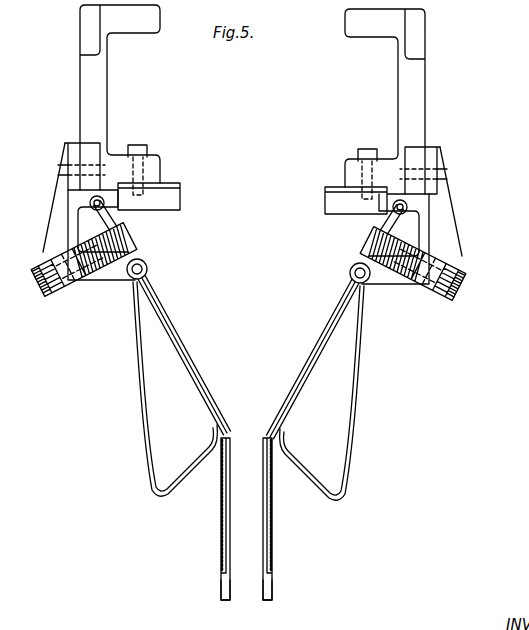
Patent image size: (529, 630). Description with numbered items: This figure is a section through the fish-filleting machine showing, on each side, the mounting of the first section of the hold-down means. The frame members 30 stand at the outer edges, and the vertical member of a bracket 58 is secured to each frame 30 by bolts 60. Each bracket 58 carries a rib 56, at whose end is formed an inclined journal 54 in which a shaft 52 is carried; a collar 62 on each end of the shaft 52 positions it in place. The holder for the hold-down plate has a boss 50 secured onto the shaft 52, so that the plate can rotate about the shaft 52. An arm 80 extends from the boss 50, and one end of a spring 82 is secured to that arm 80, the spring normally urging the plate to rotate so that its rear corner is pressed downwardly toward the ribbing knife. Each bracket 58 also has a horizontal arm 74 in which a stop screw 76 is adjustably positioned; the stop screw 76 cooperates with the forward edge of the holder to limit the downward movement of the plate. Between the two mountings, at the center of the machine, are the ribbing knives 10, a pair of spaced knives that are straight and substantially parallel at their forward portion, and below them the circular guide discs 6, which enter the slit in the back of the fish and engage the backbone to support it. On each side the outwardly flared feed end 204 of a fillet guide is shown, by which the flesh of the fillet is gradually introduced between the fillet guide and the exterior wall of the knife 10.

The frame members 30 is at (84, 64).
The bracket 58 is at (72, 143).
The bolts 60 is at (58, 166).
The rib 56 is at (46, 247).
The spring 82 is at (90, 204).
The arm 80 is at (117, 222).
The boss 50 is at (128, 251).
The shaft 52 is at (38, 287).
The collar 62 is at (53, 297).
The journal 54 is at (77, 285).
The horizontal arm 74 is at (110, 280).
The stop screw 76 is at (148, 268).
The flared feed end 204 is at (136, 354).
The ribbing knives 10 is at (266, 447).
The guide discs 6 is at (263, 598).